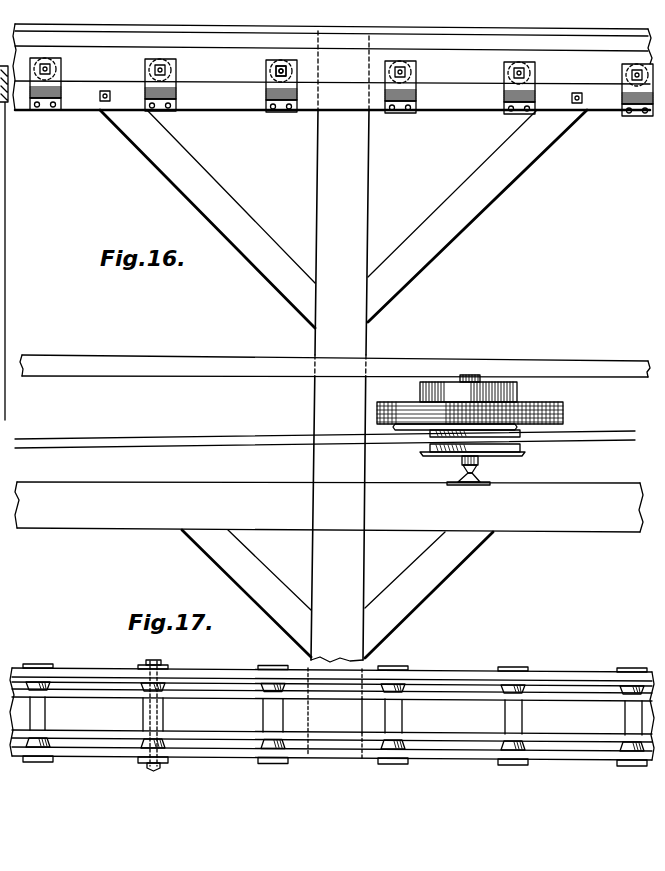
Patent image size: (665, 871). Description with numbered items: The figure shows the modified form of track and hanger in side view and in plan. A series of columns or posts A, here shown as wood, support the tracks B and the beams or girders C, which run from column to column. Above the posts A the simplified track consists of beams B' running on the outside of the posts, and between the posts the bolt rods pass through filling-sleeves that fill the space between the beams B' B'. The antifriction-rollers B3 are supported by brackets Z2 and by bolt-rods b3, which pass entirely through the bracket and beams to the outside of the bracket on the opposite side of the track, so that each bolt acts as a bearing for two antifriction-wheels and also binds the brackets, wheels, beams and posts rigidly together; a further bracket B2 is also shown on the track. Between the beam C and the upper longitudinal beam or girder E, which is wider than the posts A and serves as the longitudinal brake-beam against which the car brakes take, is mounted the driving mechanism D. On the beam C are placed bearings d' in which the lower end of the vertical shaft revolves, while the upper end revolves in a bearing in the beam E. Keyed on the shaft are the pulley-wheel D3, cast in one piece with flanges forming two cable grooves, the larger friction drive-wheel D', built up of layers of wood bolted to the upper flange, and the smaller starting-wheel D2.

In FIG. 16, the columns or posts A is at (343, 346).
In FIG. 17, the columns or posts A is at (335, 714).
In FIG. 17, the tracks B is at (332, 705).
In FIG. 16, the track beams B' is at (332, 72).
In FIG. 17, the track beams B' is at (332, 715).
In FIG. 16, the clamp bracket B2 is at (519, 80).
In FIG. 17, the clamp bracket B2 is at (575, 680).
In FIG. 16, the antifriction-rollers B3 is at (163, 76).
In FIG. 17, the antifriction-rollers B3 is at (335, 774).
In FIG. 16, the bolt-rods b3 is at (287, 71).
In FIG. 17, the bolt-rods b3 is at (159, 706).
In FIG. 16, the brackets Z2 is at (643, 107).
In FIG. 16, the beams or girders C is at (329, 507).
In FIG. 16, the longitudinal brake-beam E is at (335, 353).
In FIG. 16, the driving mechanism D is at (456, 451).
In FIG. 16, the friction drive-wheel D' is at (483, 413).
In FIG. 16, the starting-wheel D2 is at (483, 389).
In FIG. 16, the pulley-wheel D3 is at (485, 458).
In FIG. 16, the bearings d' is at (465, 470).